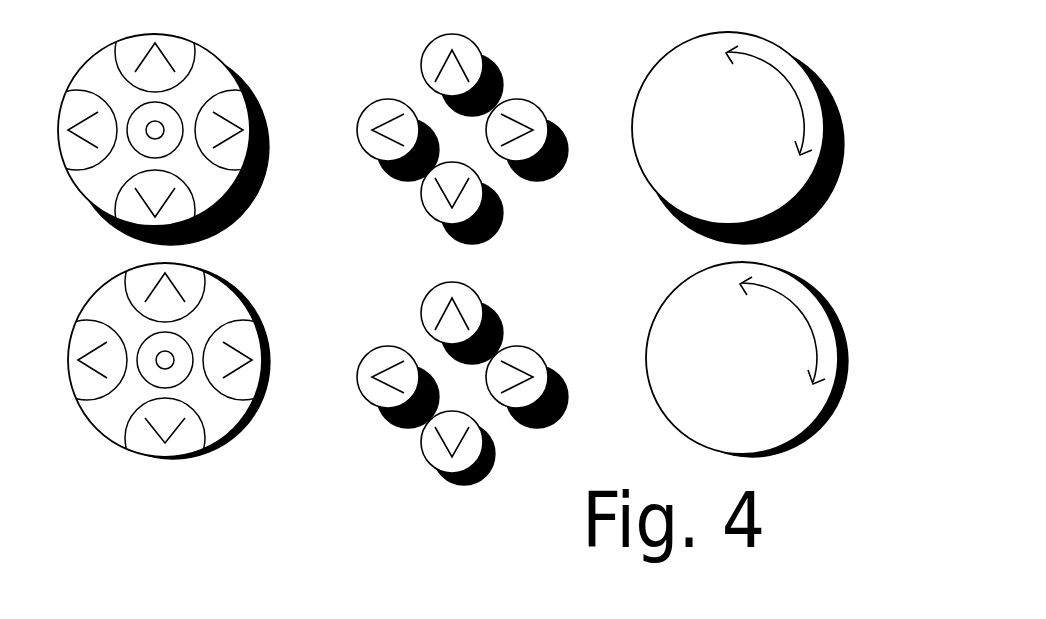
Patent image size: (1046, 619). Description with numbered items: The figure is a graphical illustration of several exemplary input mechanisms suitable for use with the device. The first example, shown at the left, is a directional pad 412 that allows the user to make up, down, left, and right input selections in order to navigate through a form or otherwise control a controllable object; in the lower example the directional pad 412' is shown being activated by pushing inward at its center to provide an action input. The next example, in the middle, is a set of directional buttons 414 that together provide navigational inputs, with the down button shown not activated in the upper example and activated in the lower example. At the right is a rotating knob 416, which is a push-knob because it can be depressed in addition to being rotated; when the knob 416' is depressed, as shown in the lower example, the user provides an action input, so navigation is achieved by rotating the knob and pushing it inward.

The directional pad 412 is at (181, 131).
The directional pad (activated) 412' is at (204, 348).
The set of directional buttons 414 is at (502, 43).
The rotating knob 416 is at (773, 128).
The rotating knob (depressed) 416' is at (793, 355).